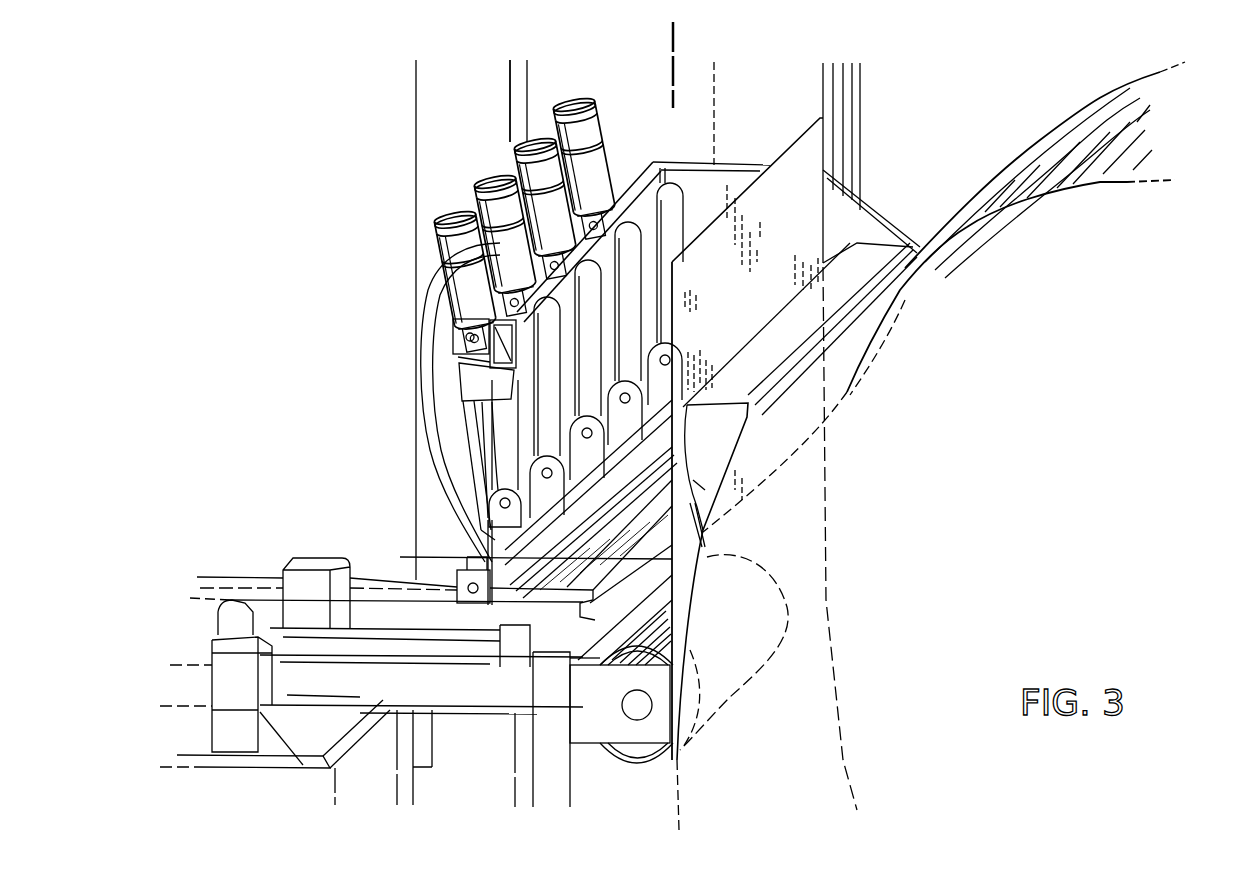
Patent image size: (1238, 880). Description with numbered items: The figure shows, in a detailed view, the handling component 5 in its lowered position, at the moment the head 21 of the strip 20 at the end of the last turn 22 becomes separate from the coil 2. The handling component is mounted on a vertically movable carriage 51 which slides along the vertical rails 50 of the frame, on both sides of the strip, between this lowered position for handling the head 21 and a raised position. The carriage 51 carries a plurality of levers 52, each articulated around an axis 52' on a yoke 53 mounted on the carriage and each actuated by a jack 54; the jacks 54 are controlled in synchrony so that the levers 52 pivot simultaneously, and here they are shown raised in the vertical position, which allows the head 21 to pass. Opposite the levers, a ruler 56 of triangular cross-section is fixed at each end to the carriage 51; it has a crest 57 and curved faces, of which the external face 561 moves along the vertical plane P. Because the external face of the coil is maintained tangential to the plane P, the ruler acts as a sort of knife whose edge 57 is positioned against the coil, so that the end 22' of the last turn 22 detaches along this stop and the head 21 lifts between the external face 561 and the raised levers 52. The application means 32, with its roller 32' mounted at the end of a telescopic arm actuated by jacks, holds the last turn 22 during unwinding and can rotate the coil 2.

The coil 2 is at (1056, 338).
The handling component 5 is at (405, 322).
The strip 20 is at (707, 550).
The head of the strip 21 is at (797, 203).
The last turn of the coil 22 is at (1016, 227).
The end of the last turn 22' is at (747, 411).
The application means 32 is at (377, 699).
The roller 32' is at (621, 743).
The vertical rails 50 is at (850, 127).
The carriage 51 is at (487, 552).
The levers 52 is at (445, 358).
The axis 52' is at (456, 446).
The yoke 53 is at (512, 463).
The jack 54 is at (463, 288).
The ruler 56 is at (717, 431).
The external face of the ruler 561 is at (693, 487).
The crest 57 is at (707, 542).
The vertical plane P is at (683, 63).